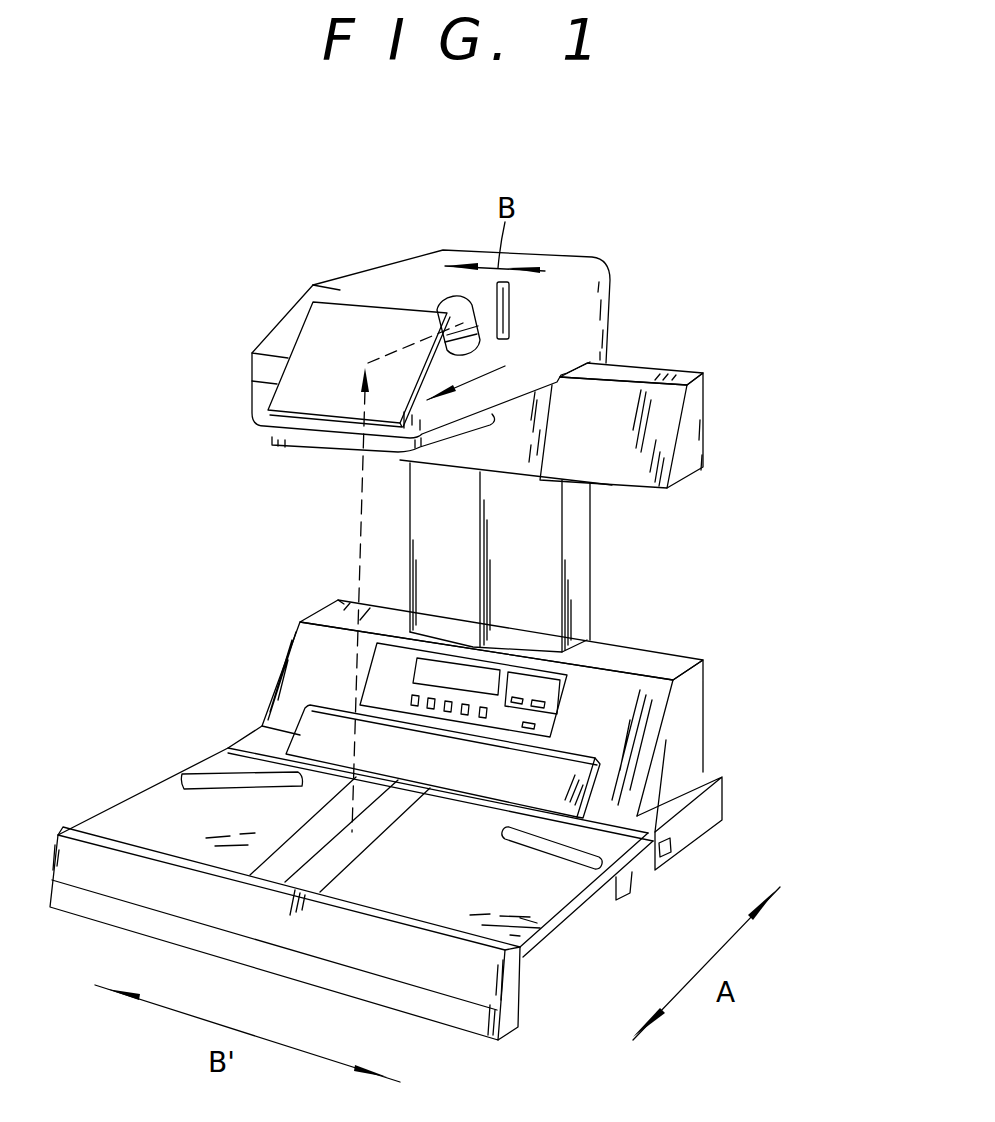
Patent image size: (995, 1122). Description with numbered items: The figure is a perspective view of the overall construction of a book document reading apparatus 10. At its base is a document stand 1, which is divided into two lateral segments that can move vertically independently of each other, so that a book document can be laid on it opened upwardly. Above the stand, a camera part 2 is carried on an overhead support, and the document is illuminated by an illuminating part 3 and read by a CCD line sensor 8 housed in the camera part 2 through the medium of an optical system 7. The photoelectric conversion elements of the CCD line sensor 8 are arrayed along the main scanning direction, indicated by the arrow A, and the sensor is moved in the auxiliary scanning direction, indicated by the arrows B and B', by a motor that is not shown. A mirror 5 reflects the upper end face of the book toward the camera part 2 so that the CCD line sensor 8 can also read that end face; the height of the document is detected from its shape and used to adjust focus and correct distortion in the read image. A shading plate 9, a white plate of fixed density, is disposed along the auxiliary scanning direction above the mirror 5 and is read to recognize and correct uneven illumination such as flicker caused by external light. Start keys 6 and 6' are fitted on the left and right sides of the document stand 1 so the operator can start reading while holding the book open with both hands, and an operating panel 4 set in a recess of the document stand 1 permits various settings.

The document stand 1 is at (535, 914).
The camera part 2 is at (281, 328).
The illuminating part 3 is at (693, 440).
The operating panel 4 is at (560, 707).
The mirror 5 is at (315, 735).
The start key 6 is at (226, 740).
The start key 6' is at (594, 877).
The optical system 7 is at (403, 270).
The CCD line sensor 8 is at (548, 290).
The shading plate 9 is at (583, 747).
The book document reading apparatus 10 is at (168, 618).